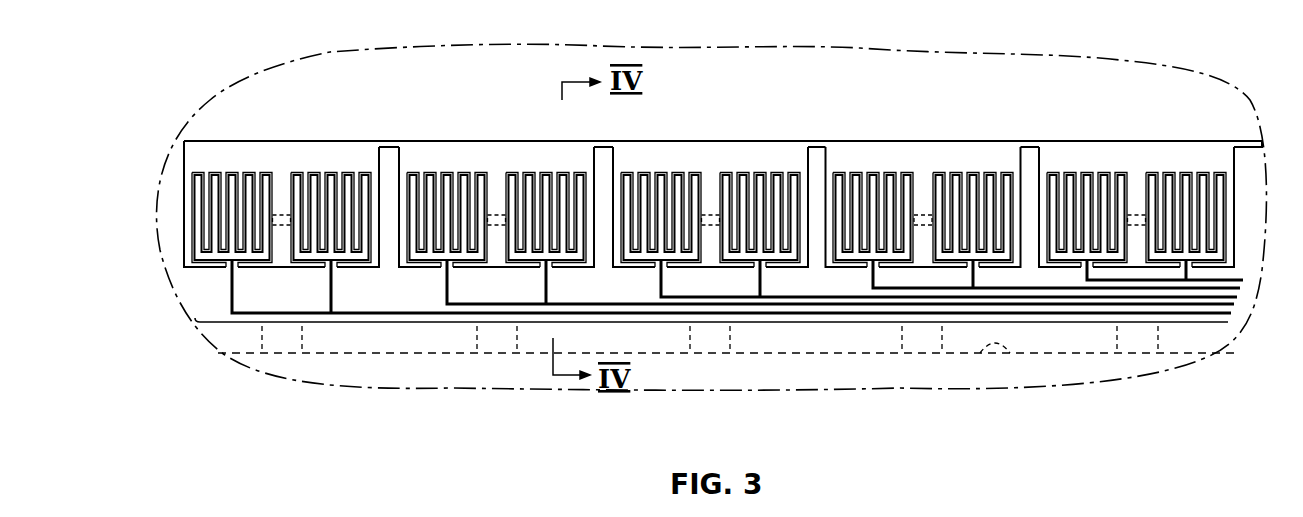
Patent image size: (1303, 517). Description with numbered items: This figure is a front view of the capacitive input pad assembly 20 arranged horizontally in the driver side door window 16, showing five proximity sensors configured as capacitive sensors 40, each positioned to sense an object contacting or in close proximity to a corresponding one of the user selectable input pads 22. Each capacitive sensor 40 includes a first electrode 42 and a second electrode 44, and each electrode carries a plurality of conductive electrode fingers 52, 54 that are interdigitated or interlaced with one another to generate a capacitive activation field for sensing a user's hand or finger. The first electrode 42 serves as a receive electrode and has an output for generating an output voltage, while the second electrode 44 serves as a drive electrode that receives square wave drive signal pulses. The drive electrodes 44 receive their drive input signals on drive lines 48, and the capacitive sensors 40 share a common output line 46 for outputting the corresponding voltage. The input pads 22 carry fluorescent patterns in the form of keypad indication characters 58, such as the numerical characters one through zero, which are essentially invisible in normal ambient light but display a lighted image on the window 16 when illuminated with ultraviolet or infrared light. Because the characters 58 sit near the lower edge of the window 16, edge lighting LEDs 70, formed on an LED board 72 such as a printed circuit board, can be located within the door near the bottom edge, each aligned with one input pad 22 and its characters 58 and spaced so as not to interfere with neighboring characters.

The driver side door window 16 is at (1190, 72).
The input pad assembly 20 is at (205, 98).
The input pads 22 is at (280, 163).
The capacitive sensors 40 is at (179, 206).
The first electrode 42 is at (373, 147).
The second electrode 44 is at (237, 270).
The common output line 46 is at (1253, 145).
The drive lines 48 is at (1228, 330).
The first plurality of electrode fingers 52 is at (364, 175).
The second plurality of electrode fingers 54 is at (215, 175).
The keypad indication characters 58 is at (981, 195).
The edge lighting LEDs 70 is at (282, 348).
The LED board 72 is at (1010, 356).